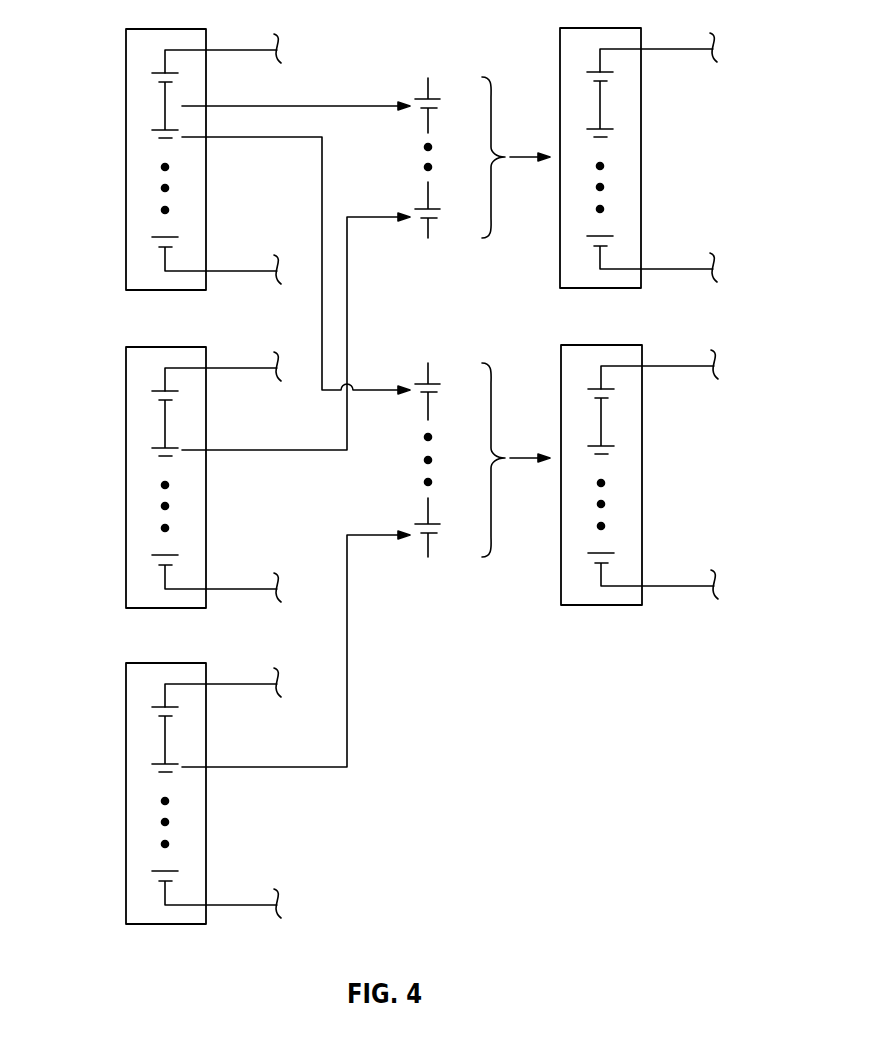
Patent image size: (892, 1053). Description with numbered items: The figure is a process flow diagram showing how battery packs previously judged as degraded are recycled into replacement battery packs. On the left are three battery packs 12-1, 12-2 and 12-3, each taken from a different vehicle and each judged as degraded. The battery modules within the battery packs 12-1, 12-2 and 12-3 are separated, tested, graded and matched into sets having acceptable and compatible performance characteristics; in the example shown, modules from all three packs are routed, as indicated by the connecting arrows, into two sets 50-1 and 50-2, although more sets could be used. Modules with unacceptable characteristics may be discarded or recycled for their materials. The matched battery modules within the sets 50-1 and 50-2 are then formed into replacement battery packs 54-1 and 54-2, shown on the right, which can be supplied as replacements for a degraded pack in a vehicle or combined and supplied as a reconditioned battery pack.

The battery pack 12-1 is at (127, 162).
The battery pack 12-2 is at (127, 477).
The battery pack 12-3 is at (127, 793).
The set 50-1 is at (449, 62).
The set 50-2 is at (449, 357).
The replacement battery pack 54-1 is at (642, 158).
The replacement battery pack 54-2 is at (642, 475).